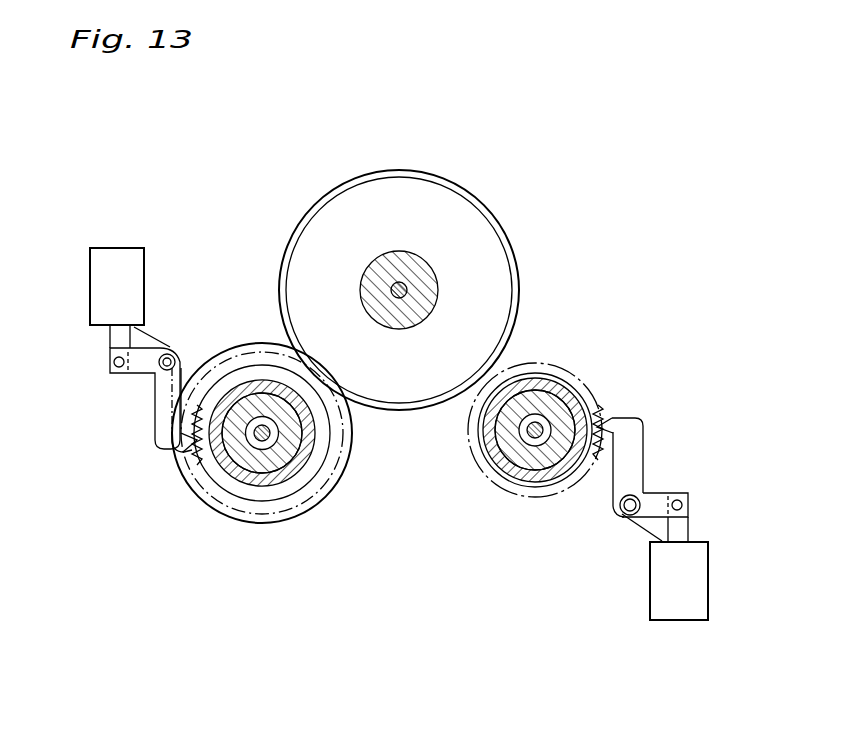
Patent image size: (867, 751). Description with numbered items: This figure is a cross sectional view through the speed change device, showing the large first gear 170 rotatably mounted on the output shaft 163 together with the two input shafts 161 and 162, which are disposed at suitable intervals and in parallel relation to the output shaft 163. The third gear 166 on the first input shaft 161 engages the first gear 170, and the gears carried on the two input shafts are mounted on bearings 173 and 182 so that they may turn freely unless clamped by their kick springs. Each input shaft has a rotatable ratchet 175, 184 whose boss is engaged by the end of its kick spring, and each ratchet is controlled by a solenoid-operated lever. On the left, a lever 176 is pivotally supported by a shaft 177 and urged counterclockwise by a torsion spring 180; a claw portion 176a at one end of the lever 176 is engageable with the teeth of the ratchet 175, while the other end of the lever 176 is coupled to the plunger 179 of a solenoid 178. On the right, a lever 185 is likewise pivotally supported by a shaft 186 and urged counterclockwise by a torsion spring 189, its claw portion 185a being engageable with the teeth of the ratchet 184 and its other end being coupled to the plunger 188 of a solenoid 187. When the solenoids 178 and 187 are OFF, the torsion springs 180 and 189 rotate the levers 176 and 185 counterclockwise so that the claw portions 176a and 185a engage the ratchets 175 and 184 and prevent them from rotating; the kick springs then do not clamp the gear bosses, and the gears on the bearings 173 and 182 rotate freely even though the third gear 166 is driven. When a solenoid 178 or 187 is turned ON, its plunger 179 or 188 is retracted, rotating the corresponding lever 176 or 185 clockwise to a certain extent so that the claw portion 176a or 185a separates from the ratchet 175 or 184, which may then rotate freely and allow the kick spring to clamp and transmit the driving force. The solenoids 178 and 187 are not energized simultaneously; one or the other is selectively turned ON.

The first gear 170 is at (480, 207).
The output shaft 163 is at (400, 283).
The third gear 166 is at (347, 466).
The input shaft 161 is at (283, 453).
The bearing 173 is at (262, 452).
The solenoid 178 is at (118, 248).
The plunger 179 is at (110, 333).
The torsion spring 180 is at (150, 338).
The lever 176 is at (143, 364).
The claw portion 176a is at (190, 460).
The shaft 177 is at (183, 350).
The ratchet 175 is at (194, 463).
The bearing 182 is at (542, 450).
The input shaft 162 is at (527, 445).
The solenoid 187 is at (687, 607).
The plunger 188 is at (683, 528).
The shaft 186 is at (620, 517).
The torsion spring 189 is at (645, 527).
The lever 185 is at (636, 442).
The claw portion 185a is at (614, 418).
The ratchet 184 is at (603, 405).